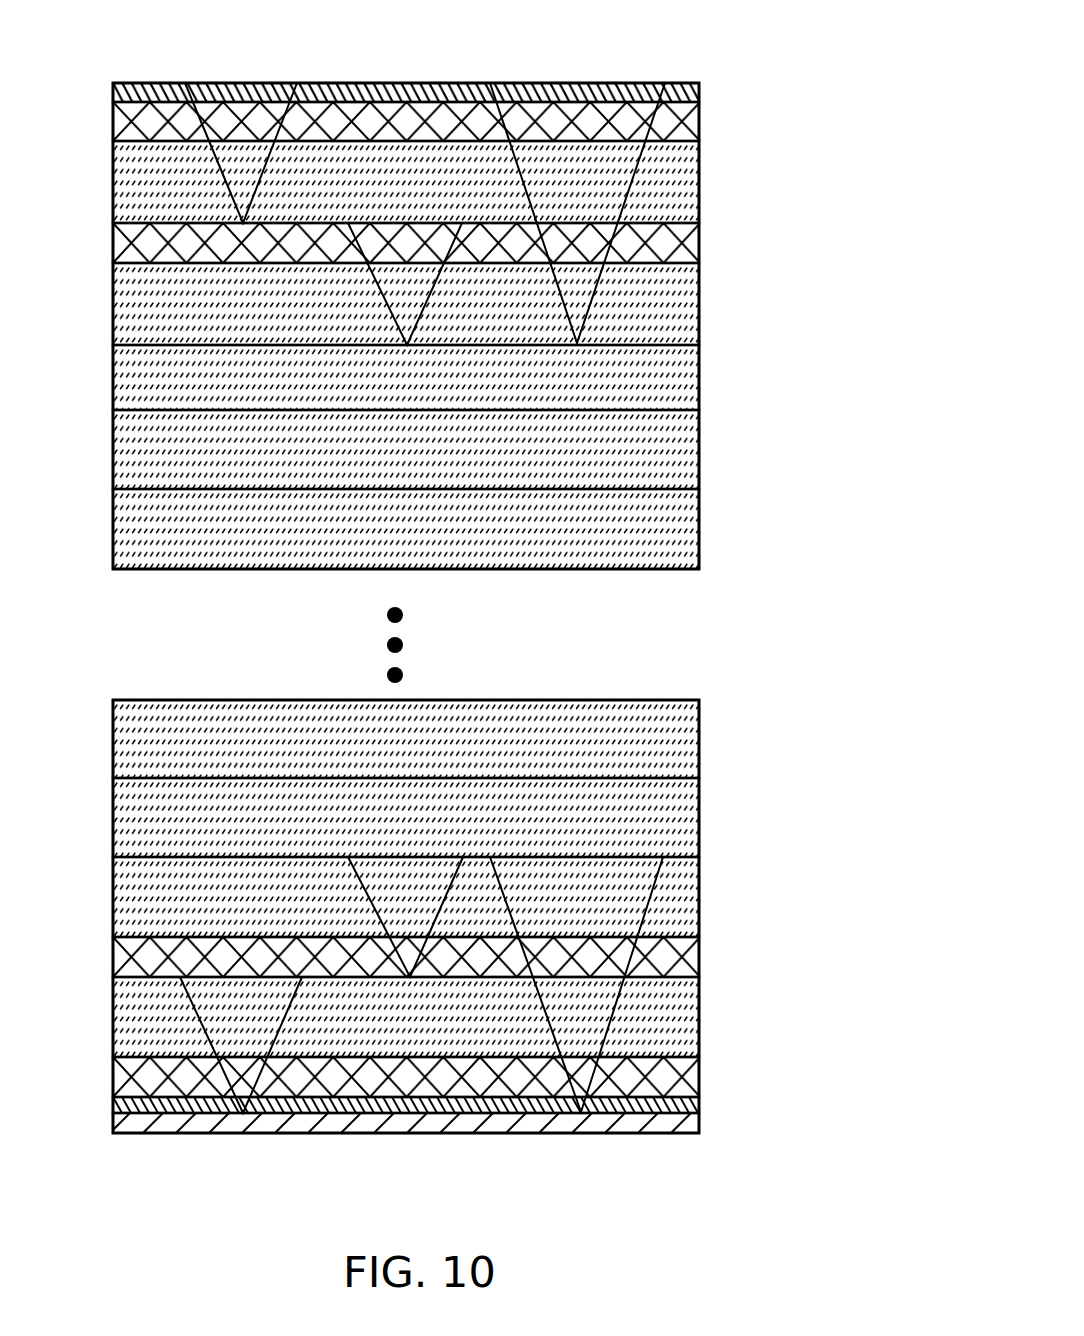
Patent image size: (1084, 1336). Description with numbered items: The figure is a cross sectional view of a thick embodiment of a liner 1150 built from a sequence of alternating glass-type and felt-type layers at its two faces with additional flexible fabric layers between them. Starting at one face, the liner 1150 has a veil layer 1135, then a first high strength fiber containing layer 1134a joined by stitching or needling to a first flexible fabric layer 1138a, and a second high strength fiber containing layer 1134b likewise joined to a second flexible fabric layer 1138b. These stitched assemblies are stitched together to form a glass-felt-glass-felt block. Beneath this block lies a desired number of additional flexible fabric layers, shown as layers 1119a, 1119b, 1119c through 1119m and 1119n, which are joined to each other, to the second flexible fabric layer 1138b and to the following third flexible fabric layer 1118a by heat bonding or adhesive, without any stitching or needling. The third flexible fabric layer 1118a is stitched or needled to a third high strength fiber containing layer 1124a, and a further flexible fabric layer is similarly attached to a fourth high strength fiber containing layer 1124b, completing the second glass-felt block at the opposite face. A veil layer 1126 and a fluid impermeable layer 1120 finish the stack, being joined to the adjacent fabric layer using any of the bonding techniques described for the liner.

The veil layer 1135 is at (700, 88).
The first high strength fiber containing layer 1134a is at (700, 120).
The first flexible fabric layer 1138a is at (700, 178).
The second high strength fiber containing layer 1134b is at (700, 240).
The second flexible fabric layer 1138b is at (700, 300).
The additional flexible fabric layer 1119a is at (700, 367).
The additional flexible fabric layer 1119b is at (700, 447).
The additional flexible fabric layer 1119c is at (700, 527).
The additional flexible fabric layer 1119m is at (700, 737).
The additional flexible fabric layer 1119n is at (700, 817).
The third flexible fabric layer 1118a is at (700, 897).
The third high strength fiber containing layer 1124a is at (700, 957).
The fourth high strength fiber containing layer 1124b is at (700, 1075).
The veil layer 1126 is at (700, 1103).
The fluid impermeable layer 1120 is at (700, 1123).
The liner 1150 is at (540, 1182).